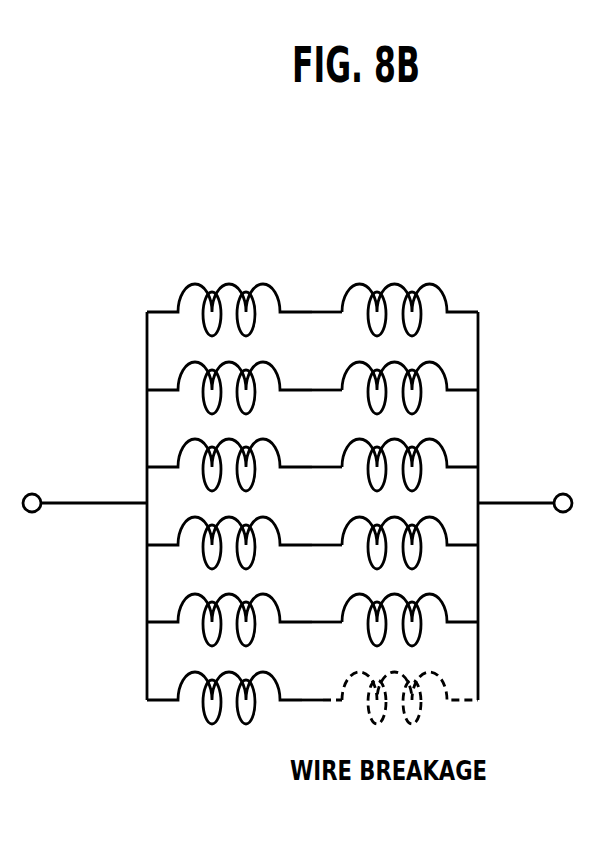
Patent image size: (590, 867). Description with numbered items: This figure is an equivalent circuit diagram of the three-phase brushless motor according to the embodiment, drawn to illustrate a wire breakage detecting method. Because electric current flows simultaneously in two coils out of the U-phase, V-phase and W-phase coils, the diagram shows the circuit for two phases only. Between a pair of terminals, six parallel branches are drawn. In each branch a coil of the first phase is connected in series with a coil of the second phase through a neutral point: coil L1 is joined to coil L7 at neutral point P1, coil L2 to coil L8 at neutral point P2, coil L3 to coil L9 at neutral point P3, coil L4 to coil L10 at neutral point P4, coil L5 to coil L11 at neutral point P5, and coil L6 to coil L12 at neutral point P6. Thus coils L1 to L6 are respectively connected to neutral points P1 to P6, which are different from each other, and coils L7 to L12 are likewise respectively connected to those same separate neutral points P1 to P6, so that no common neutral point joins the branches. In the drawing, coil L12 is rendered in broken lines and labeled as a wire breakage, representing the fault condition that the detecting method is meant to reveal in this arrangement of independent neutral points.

The coil L1 is at (229, 294).
The coil L2 is at (229, 372).
The coil L3 is at (229, 449).
The coil L4 is at (229, 527).
The coil L5 is at (229, 604).
The coil L6 is at (224, 682).
The coil L7 is at (410, 295).
The coil L8 is at (410, 373).
The coil L9 is at (410, 450).
The coil L10 is at (410, 528).
The coil L11 is at (410, 605).
The coil L12 is at (410, 683).
The neutral point P1 is at (312, 312).
The neutral point P2 is at (312, 390).
The neutral point P3 is at (312, 467).
The neutral point P4 is at (312, 545).
The neutral point P5 is at (312, 622).
The neutral point P6 is at (302, 700).